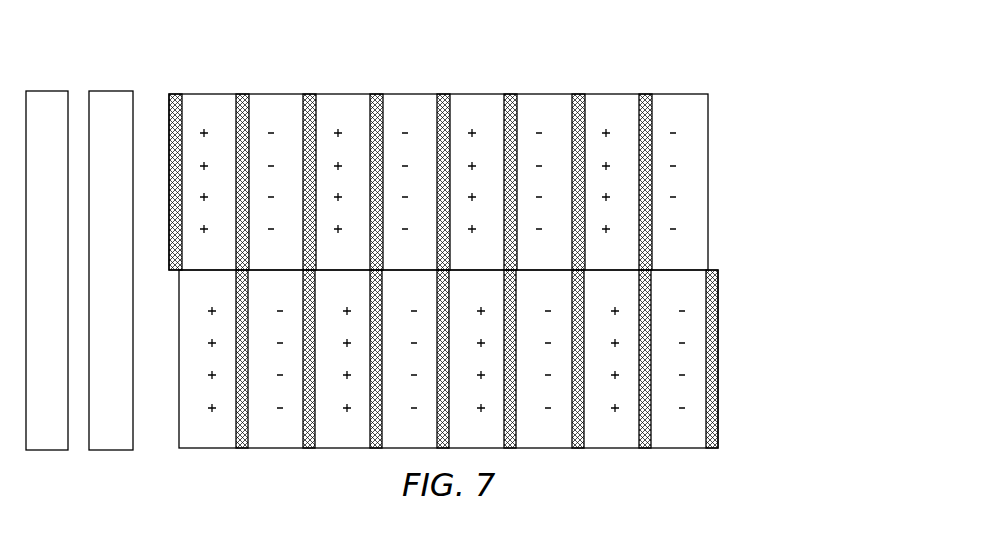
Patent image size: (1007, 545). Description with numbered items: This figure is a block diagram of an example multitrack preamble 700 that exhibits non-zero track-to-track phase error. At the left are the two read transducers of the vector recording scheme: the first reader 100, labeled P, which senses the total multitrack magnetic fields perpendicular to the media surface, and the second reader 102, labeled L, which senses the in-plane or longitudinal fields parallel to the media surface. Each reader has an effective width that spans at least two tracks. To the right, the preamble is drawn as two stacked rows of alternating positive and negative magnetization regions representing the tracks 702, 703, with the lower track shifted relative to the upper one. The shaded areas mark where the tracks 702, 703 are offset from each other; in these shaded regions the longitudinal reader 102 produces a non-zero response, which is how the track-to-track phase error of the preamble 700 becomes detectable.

The first reader 100 is at (49, 89).
The second reader 102 is at (108, 89).
The multitrack preamble 700 is at (755, 58).
The track 702 is at (735, 91).
The track 703 is at (735, 272).